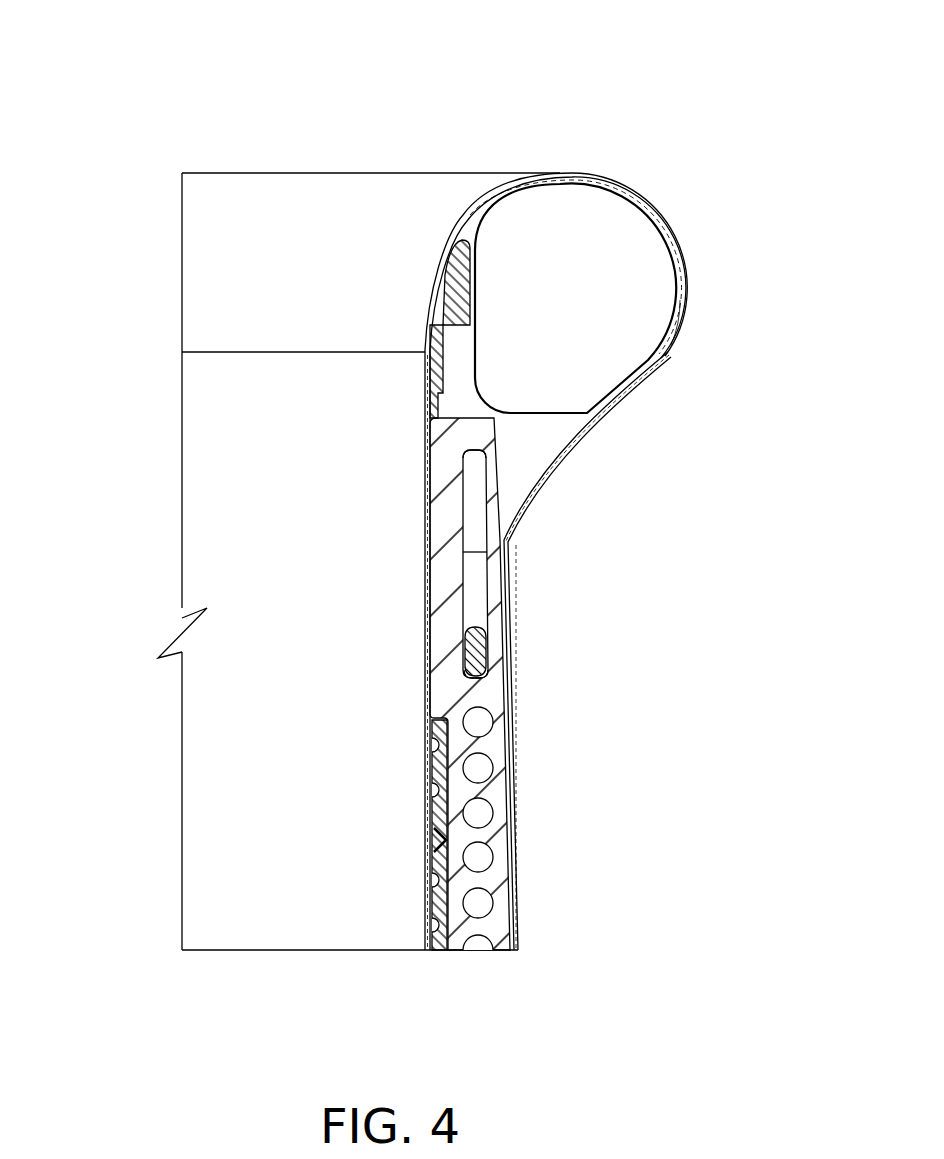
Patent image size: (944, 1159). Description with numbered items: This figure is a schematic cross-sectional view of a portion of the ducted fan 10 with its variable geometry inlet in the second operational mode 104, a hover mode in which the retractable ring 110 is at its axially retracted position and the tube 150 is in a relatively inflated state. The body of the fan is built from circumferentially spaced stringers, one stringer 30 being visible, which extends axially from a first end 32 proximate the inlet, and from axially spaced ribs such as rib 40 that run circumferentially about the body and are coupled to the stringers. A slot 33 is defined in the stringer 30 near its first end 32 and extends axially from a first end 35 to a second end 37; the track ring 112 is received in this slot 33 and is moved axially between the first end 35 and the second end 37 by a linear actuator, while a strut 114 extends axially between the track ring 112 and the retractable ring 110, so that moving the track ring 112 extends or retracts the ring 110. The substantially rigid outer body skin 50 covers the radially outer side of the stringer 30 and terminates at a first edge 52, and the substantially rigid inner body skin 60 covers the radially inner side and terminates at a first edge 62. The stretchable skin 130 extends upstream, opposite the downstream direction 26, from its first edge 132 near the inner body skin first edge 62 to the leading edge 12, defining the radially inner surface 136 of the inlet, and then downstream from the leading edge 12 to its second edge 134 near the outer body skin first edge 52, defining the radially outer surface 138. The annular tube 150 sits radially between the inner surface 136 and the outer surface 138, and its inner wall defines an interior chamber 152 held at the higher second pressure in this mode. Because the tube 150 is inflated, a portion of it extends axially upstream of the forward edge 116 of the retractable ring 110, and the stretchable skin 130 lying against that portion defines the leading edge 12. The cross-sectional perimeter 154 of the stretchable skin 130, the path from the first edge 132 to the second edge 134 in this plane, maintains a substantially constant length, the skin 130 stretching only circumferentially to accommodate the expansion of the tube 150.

The ducted fan 10 is at (233, 72).
The leading edge 12 is at (553, 175).
The downstream direction 26 is at (370, 105).
The stringer 30 is at (490, 745).
The first end 32 is at (420, 428).
The slot 33 is at (488, 600).
The first end 35 is at (492, 444).
The second end 37 is at (498, 686).
The rib 40 is at (430, 843).
The outer body skin 50 is at (518, 805).
The first edge 52 is at (531, 565).
The inner body skin 60 is at (298, 625).
The first edge 62 is at (254, 362).
The second operational mode 104 is at (549, 90).
The retractable ring 110 is at (447, 295).
The track ring 112 is at (472, 655).
The strut 114 is at (427, 405).
The forward edge 116 is at (468, 213).
The stretchable skin 130 is at (390, 237).
The first edge 132 is at (250, 344).
The second edge 134 is at (527, 548).
The radially inner surface 136 is at (406, 195).
The radially outer surface 138 is at (670, 232).
The tube 150 is at (678, 282).
The interior chamber 152 is at (595, 256).
The cross-sectional perimeter 154 is at (683, 330).